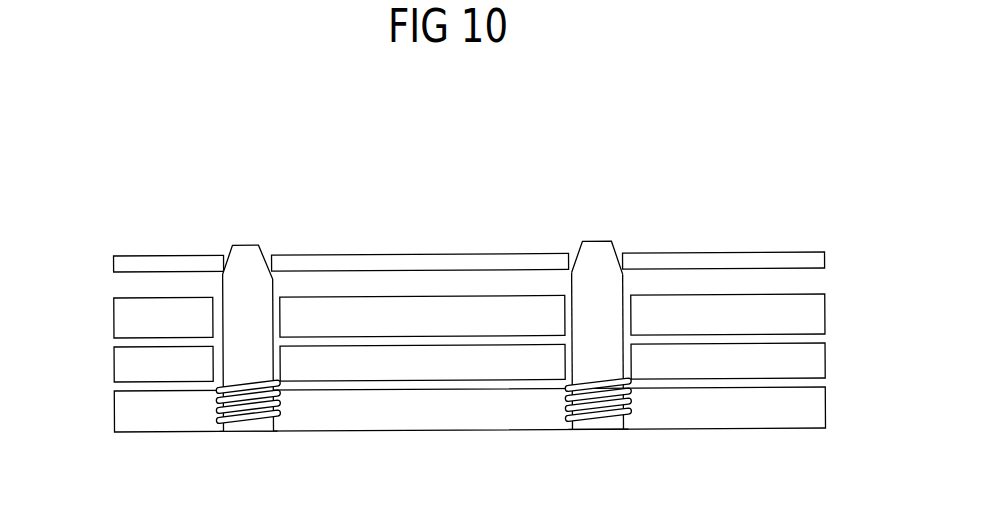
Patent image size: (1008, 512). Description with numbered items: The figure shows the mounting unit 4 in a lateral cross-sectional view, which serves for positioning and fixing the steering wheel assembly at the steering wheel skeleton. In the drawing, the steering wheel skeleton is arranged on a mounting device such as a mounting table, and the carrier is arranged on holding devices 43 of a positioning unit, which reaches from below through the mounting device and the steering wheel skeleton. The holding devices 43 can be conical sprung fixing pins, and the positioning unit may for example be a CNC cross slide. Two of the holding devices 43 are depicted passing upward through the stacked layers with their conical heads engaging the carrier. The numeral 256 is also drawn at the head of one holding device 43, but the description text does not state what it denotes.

The mounting unit 4 is at (82, 252).
The holding device 43 is at (430, 310).
The fastener head 256 is at (578, 252).